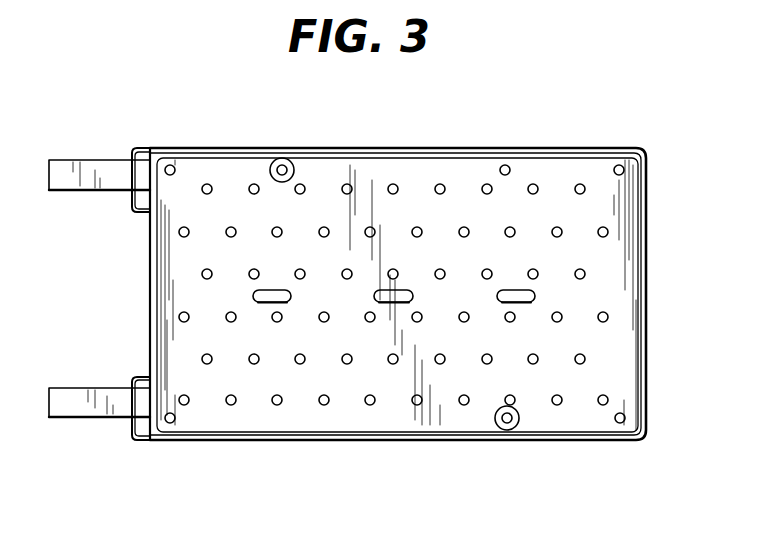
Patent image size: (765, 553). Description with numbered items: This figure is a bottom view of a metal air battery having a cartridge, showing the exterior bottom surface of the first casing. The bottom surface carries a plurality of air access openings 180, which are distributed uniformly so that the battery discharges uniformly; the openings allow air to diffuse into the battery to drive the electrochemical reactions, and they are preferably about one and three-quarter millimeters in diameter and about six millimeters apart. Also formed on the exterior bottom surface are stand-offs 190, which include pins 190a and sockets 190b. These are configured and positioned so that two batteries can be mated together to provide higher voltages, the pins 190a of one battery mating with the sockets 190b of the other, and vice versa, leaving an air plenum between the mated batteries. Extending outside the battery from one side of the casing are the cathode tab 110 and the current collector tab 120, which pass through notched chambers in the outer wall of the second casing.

The cathode tab 110 is at (105, 167).
The current collector tab 120 is at (88, 408).
The air access openings 180 is at (580, 183).
The stand-offs 190 is at (282, 160).
The pins 190a is at (505, 160).
The sockets 190b is at (507, 425).